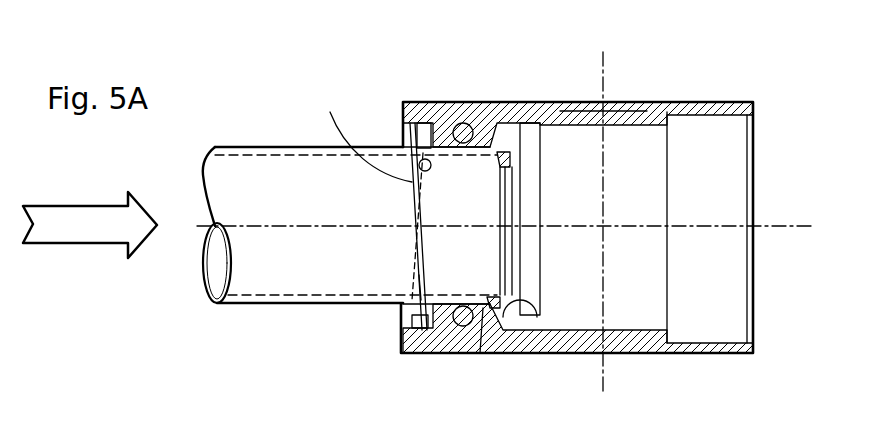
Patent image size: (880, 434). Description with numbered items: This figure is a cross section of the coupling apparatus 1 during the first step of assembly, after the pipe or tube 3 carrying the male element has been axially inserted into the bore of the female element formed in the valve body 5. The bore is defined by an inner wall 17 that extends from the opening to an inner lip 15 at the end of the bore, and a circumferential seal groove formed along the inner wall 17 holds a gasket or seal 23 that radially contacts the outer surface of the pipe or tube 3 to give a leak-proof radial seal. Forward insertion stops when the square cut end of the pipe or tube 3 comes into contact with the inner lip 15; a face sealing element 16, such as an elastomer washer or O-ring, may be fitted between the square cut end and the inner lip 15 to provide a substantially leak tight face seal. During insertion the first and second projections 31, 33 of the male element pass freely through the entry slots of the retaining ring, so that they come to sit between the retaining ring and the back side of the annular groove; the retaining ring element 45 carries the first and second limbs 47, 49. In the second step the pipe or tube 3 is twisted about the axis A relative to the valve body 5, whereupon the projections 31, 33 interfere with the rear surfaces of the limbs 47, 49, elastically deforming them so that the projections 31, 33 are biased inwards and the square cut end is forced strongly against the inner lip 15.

The coupling apparatus 1 is at (393, 366).
The pipe or tube 3 is at (255, 208).
The valve body 5 is at (463, 102).
The inner lip 15 is at (525, 165).
The face sealing element 16 is at (527, 353).
The inner wall 17 is at (480, 353).
The gasket or seal 23 is at (458, 353).
The first projection 31 is at (437, 284).
The second projection 33 is at (429, 171).
The retaining ring element 45 is at (423, 125).
The first limb 47 is at (410, 275).
The second limb 49 is at (413, 203).
The axis A is at (653, 228).